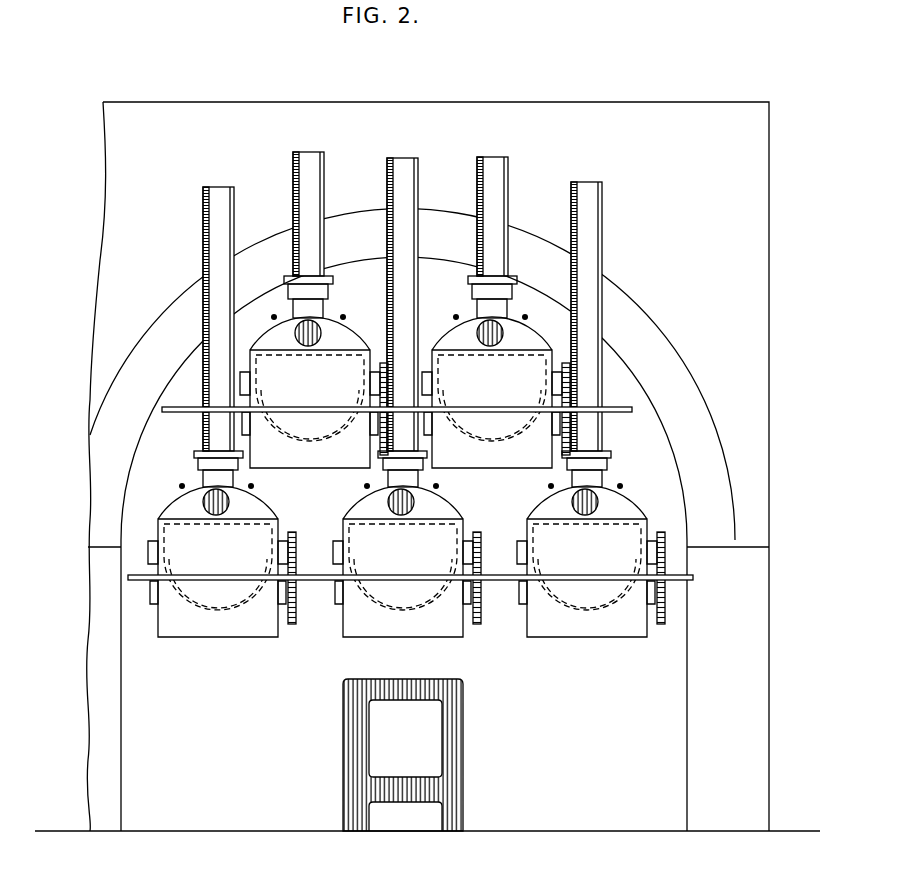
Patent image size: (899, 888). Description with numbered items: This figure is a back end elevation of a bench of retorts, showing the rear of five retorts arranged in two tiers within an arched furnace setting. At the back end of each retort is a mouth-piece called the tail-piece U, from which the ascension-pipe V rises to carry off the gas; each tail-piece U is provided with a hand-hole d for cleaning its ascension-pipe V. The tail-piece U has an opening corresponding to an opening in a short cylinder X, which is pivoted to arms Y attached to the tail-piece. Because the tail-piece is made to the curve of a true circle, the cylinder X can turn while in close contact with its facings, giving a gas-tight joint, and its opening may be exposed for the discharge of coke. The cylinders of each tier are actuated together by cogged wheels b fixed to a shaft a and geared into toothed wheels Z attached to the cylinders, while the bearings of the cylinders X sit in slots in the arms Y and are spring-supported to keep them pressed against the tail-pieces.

The ascension-pipe V is at (402, 319).
The toothed wheel Z is at (287, 523).
The short cylinder X is at (402, 482).
The tail-piece U is at (409, 417).
The hand-hole d is at (572, 502).
The arm Y is at (648, 600).
The cogged wheel b is at (668, 603).
The shaft a is at (410, 481).